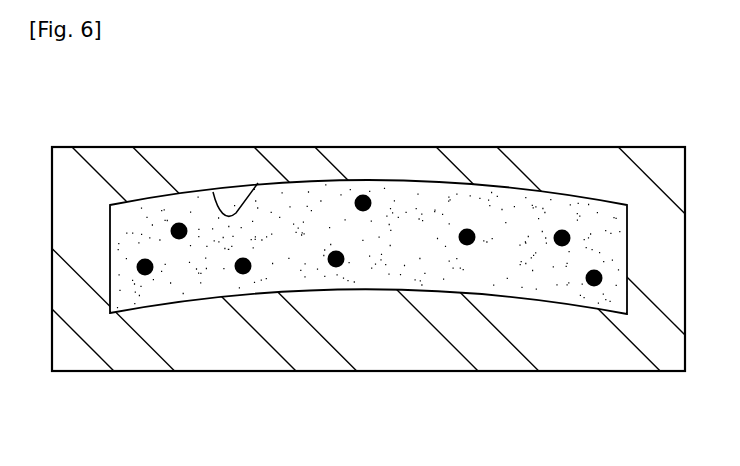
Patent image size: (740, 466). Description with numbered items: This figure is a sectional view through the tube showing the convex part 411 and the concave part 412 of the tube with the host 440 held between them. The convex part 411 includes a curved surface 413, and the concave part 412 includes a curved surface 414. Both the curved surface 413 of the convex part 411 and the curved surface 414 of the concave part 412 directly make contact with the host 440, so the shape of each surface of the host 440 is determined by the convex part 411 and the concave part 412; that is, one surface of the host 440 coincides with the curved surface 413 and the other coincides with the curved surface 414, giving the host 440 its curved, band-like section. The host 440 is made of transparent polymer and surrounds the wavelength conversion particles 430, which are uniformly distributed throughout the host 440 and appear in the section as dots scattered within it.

The convex part 411 is at (403, 350).
The concave part 412 is at (376, 160).
The curved surface 413 is at (252, 296).
The curved surface 414 is at (213, 192).
The wavelength conversion particles 430 is at (562, 232).
The host 440 is at (502, 207).